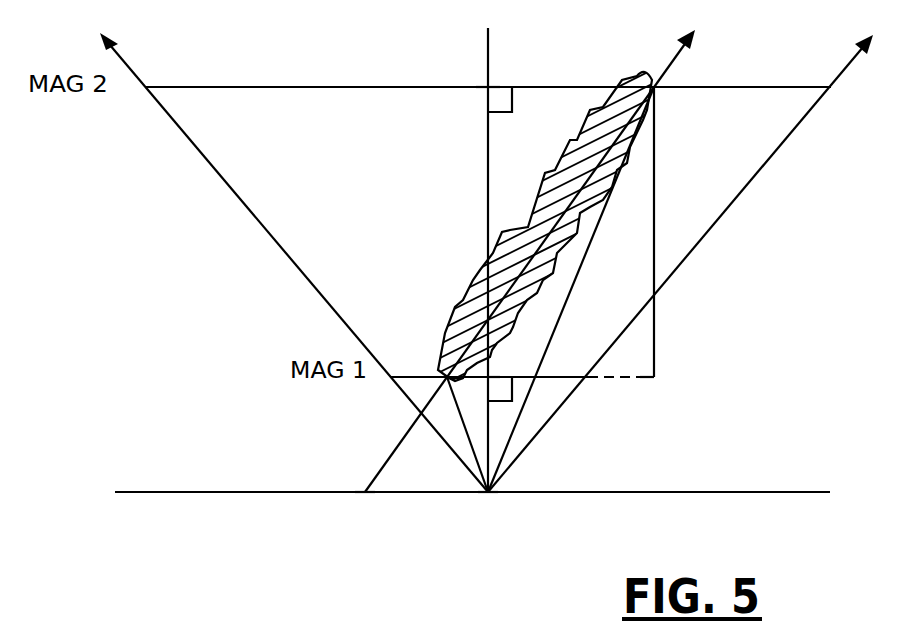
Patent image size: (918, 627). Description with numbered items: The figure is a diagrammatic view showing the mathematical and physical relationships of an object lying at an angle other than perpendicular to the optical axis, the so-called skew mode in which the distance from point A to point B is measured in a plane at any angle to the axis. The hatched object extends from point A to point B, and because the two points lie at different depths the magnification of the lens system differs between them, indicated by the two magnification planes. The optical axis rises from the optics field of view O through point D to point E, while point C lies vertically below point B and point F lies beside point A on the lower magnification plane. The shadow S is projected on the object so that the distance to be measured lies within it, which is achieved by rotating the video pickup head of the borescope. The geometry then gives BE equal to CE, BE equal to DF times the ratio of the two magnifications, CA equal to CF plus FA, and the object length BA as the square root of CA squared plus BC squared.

The point A is at (550, 262).
The point B is at (571, 264).
The point C is at (661, 367).
The point D is at (513, 364).
The point E is at (482, 72).
The point F is at (465, 391).
The shadow S is at (363, 492).
The optics field of view O is at (509, 514).